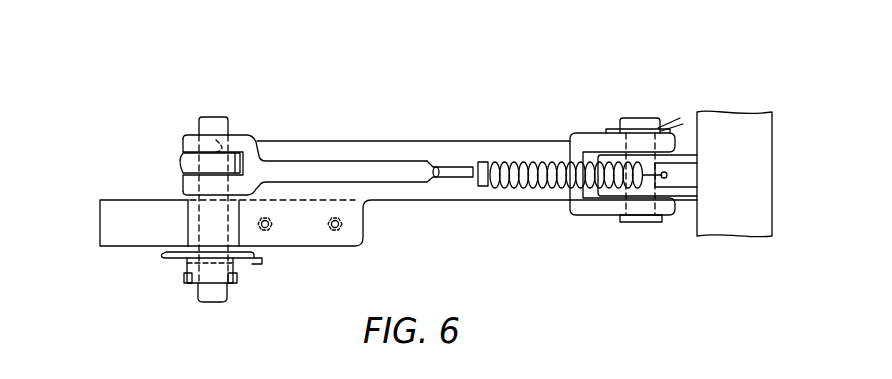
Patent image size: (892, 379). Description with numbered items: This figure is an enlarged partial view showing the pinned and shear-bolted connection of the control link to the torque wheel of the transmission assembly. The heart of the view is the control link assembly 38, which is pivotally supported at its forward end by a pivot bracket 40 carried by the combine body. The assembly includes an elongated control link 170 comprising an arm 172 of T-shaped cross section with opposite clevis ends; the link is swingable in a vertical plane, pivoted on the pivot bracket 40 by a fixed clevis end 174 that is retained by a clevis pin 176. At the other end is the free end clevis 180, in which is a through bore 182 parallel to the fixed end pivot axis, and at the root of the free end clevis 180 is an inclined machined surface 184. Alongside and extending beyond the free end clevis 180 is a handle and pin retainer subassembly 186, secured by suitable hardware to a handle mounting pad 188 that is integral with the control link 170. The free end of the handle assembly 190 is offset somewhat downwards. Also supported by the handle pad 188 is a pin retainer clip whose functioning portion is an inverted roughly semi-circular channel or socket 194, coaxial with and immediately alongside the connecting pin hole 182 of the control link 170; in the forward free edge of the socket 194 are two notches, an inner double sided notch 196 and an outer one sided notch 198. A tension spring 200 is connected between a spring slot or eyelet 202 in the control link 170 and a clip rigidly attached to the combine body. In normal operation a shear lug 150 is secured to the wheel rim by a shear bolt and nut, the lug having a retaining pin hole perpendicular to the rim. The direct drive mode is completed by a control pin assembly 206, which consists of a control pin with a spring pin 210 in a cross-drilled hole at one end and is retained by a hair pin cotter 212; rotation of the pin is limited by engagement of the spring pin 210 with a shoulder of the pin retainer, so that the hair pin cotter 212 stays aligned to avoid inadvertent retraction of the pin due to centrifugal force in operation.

The control link assembly 38 is at (213, 75).
The pivot bracket 40 is at (718, 130).
The shear lug 150 is at (206, 138).
The control link 170 is at (383, 115).
The arm 172 is at (403, 161).
The fixed clevis end 174 is at (592, 133).
The clevis pin 176 is at (635, 117).
The free end clevis 180 is at (260, 150).
The through bore 182 is at (226, 138).
The inclined machined surface 184 is at (182, 160).
The handle and pin retainer subassembly 186 is at (93, 188).
The handle mounting pad 188 is at (363, 232).
The handle assembly 190 is at (152, 210).
The socket 194 is at (210, 295).
The inner double sided notch 196 is at (190, 262).
The outer one sided notch 198 is at (187, 280).
The tension spring 200 is at (538, 189).
The spring slot or eyelet 202 is at (479, 187).
The control pin assembly 206 is at (226, 312).
The spring pin 210 is at (240, 283).
The hair pin cotter 212 is at (160, 254).